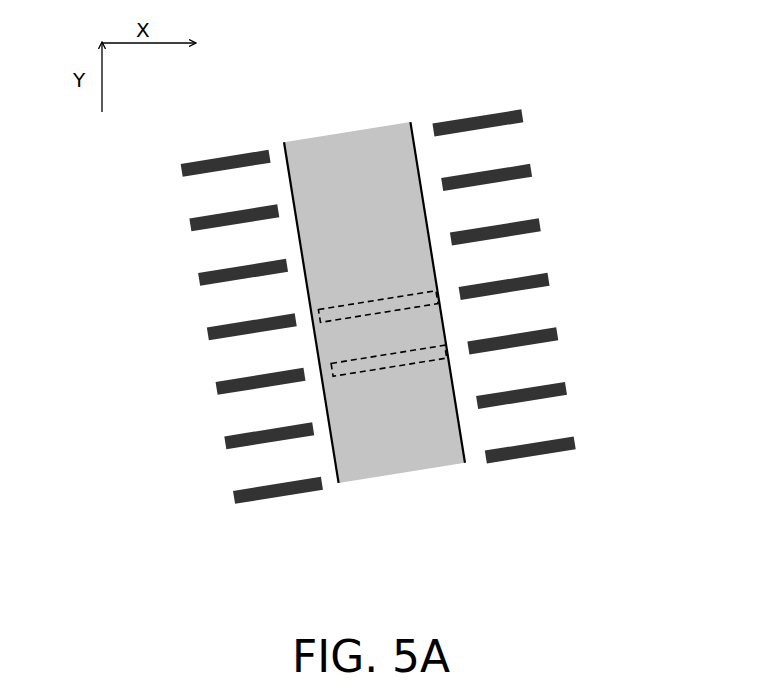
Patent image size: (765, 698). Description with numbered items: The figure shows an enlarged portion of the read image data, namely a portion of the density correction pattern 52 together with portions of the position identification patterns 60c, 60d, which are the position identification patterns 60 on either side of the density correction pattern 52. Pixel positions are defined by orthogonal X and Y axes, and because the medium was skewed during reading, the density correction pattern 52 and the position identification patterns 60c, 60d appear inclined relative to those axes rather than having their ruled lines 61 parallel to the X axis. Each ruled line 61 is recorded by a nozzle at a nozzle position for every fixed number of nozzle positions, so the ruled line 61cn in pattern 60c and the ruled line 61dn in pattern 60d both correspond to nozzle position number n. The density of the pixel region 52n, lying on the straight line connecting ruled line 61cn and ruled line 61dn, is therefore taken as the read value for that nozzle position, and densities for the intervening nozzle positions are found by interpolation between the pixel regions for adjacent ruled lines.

The density correction pattern 52 is at (338, 120).
The pixel region 52n is at (390, 316).
The position identification pattern 60 is at (385, 267).
The position identification pattern 60c is at (228, 137).
The position identification pattern 60d is at (475, 108).
The ruled line 61 is at (170, 170).
The ruled line 61cn is at (200, 333).
The ruled line 61dn is at (555, 280).